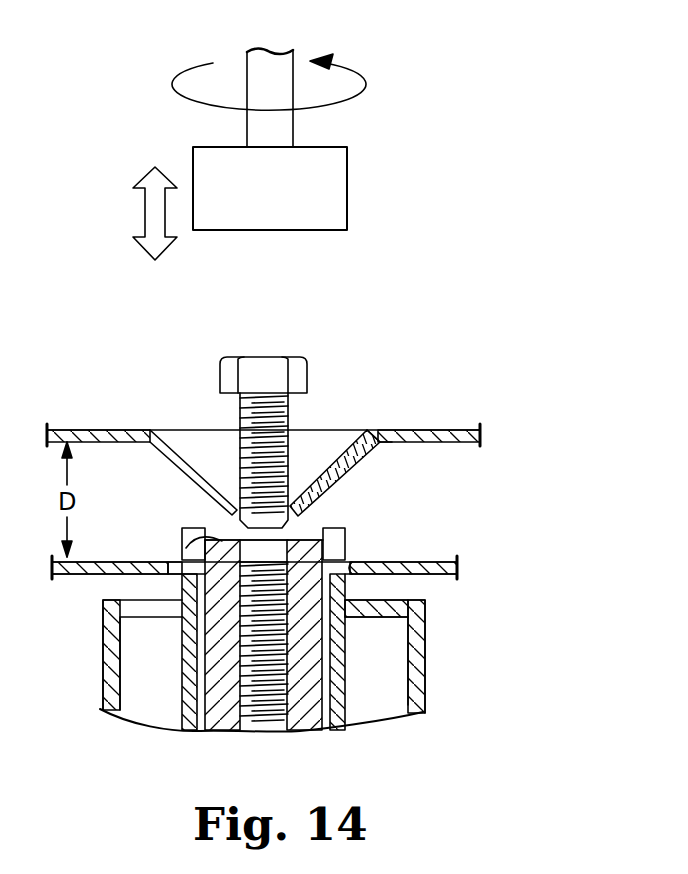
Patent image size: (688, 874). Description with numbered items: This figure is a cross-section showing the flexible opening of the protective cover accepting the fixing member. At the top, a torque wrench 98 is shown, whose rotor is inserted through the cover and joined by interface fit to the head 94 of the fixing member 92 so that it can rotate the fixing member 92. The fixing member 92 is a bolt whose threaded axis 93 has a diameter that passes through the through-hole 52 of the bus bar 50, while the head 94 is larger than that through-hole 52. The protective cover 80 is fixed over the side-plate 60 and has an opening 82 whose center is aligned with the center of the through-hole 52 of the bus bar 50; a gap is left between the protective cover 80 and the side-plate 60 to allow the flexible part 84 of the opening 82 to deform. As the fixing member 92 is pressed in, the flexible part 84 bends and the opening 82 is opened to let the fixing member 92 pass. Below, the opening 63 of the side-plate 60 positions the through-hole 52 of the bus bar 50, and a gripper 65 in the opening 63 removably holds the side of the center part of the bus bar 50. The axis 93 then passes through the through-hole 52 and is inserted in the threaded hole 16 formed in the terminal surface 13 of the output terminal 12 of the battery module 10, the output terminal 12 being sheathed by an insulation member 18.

The torque wrench 98 is at (340, 190).
The fixing member 92 is at (327, 398).
The head 94 is at (272, 357).
The axis 93 is at (292, 437).
The flexible part 84 is at (192, 440).
The opening 82 is at (377, 433).
The protective cover 80 is at (447, 430).
The side-plate 60 is at (275, 565).
The opening 63 is at (352, 572).
The gripper 65 is at (182, 543).
The bus bar 50 is at (268, 630).
The through-hole 52 is at (247, 538).
The terminal surface 13 is at (183, 530).
The battery module 10 is at (418, 668).
The output terminal 12 is at (225, 703).
The hole 16 is at (272, 700).
The insulation member 18 is at (347, 668).